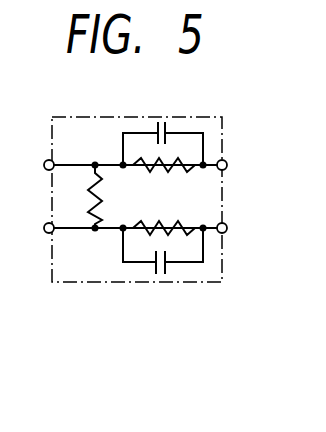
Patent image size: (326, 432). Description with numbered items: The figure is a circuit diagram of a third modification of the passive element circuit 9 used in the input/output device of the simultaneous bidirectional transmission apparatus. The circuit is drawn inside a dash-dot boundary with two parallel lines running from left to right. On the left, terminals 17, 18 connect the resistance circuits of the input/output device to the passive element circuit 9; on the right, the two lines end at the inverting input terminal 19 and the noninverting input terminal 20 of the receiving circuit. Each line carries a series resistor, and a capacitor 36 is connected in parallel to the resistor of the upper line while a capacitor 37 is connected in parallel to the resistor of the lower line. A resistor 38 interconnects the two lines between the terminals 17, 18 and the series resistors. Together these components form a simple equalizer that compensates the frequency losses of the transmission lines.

The passive element circuit 9 is at (125, 283).
The terminal 17 is at (43, 163).
The terminal 18 is at (45, 233).
The inverting input terminal 19 is at (228, 162).
The noninverting input terminal 20 is at (228, 228).
The capacitor 36 is at (162, 119).
The capacitor 37 is at (161, 274).
The resistor 38 is at (93, 196).